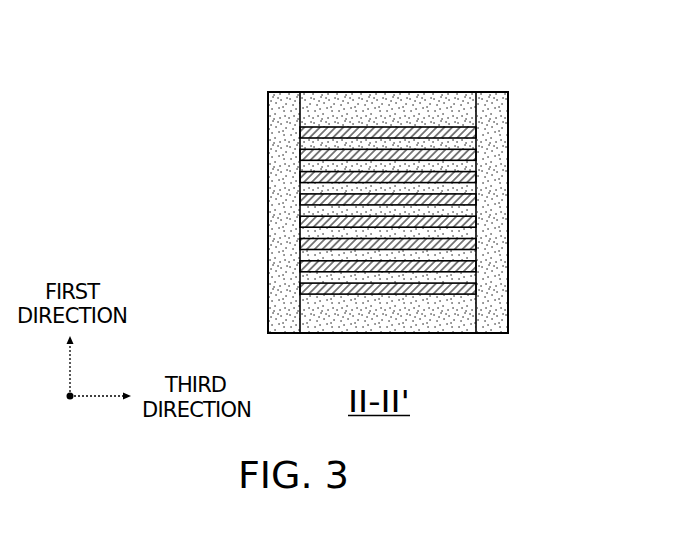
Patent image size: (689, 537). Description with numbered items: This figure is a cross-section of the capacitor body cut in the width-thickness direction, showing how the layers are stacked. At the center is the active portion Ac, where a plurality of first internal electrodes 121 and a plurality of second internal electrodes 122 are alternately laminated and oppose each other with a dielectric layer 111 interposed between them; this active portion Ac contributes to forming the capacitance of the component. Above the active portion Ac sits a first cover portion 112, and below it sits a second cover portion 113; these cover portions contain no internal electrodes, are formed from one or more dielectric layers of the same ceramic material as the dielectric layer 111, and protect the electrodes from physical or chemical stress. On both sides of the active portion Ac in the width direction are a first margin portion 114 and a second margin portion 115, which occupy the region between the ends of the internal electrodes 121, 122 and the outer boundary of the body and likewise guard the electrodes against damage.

The dielectric layer 111 is at (478, 146).
The first cover portion 112 is at (393, 104).
The second cover portion 113 is at (458, 308).
The first margin portion 114 is at (285, 254).
The second margin portion 115 is at (497, 236).
The first internal electrode 121 is at (478, 129).
The second internal electrode 122 is at (478, 158).
The active portion Ac is at (298, 213).